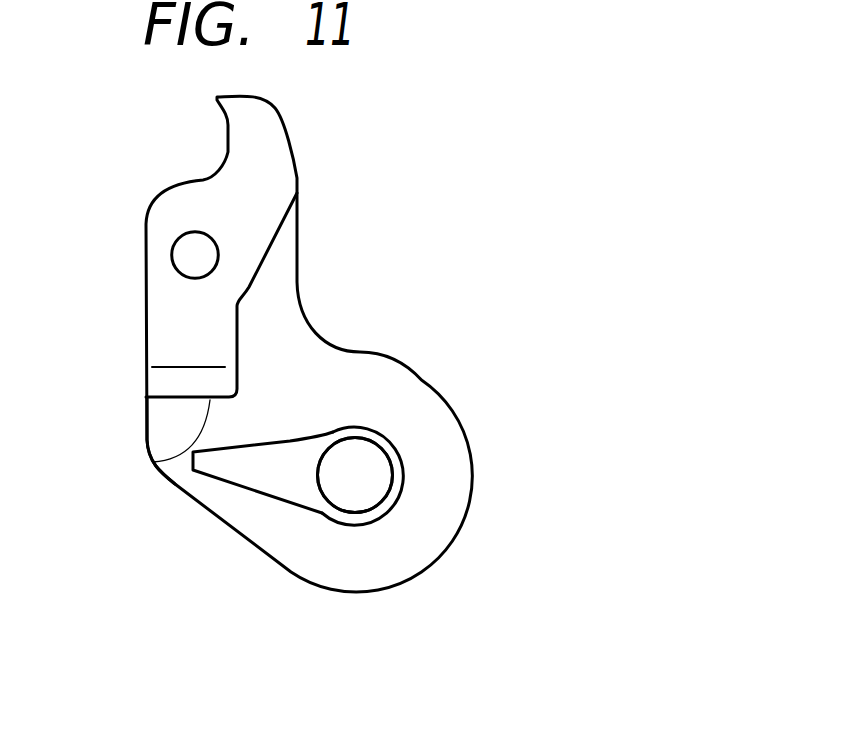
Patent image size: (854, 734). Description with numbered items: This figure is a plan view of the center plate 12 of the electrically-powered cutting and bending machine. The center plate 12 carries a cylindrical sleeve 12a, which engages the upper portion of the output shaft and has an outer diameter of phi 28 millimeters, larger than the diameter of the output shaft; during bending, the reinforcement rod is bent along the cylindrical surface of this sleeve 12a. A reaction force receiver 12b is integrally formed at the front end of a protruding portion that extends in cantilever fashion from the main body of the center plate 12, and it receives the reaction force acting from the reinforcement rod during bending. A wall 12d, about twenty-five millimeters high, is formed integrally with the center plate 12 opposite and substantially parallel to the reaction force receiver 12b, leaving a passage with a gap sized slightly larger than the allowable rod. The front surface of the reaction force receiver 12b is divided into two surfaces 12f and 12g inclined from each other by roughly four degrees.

The center plate 12 is at (293, 270).
The cylindrical sleeve 12a is at (391, 512).
The reaction force receiver 12b is at (157, 378).
The wall 12d is at (232, 468).
The surface of the reaction force receiver 12f is at (148, 415).
The surface of the reaction force receiver 12g is at (153, 462).
The outer diameter of the cylindrical sleeve 28 is at (331, 503).